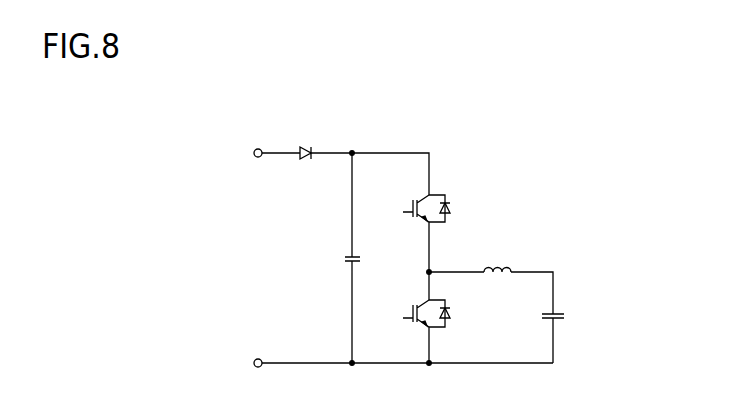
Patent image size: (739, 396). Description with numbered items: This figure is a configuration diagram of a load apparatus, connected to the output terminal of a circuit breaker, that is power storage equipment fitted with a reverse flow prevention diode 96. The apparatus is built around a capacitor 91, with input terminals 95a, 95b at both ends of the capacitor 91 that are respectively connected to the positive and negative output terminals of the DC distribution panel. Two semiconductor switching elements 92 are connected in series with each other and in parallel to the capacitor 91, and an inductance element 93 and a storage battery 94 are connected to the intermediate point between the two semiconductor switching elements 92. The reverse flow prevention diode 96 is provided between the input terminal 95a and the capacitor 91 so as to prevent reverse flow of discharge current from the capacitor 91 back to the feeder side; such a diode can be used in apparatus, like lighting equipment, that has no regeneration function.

The capacitor 91 is at (345, 255).
The semiconductor switching element 92 is at (447, 193).
The inductance element 93 is at (497, 265).
The storage battery 94 is at (560, 312).
The input terminal 95a is at (255, 149).
The input terminal 95b is at (255, 359).
The reverse flow prevention diode 96 is at (313, 148).